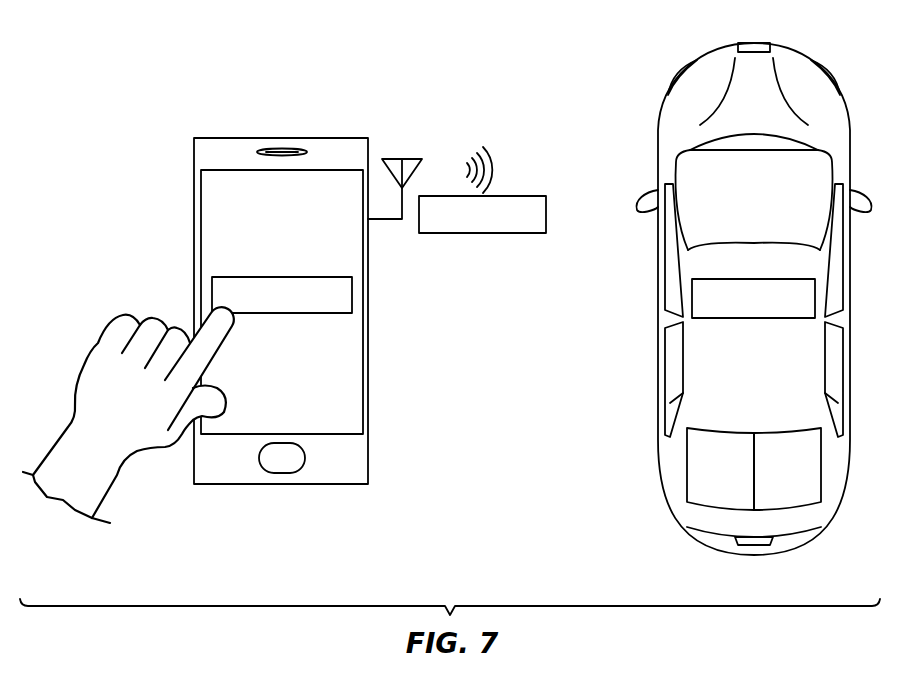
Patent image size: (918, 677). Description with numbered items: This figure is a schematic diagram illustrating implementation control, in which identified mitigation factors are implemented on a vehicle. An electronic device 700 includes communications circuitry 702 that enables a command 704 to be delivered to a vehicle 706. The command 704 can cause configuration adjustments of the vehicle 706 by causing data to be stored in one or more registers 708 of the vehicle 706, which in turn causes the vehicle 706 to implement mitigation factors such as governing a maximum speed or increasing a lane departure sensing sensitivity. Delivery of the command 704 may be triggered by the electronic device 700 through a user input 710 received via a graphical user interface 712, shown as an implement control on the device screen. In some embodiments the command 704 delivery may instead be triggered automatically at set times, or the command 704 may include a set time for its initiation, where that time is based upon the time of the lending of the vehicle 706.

The electronic device 700 is at (281, 297).
The communications circuitry 702 is at (403, 160).
The command 704 is at (547, 212).
The vehicle 706 is at (738, 299).
The register 708 is at (756, 319).
The user input 710 is at (96, 346).
The graphical user interface 712 is at (299, 256).